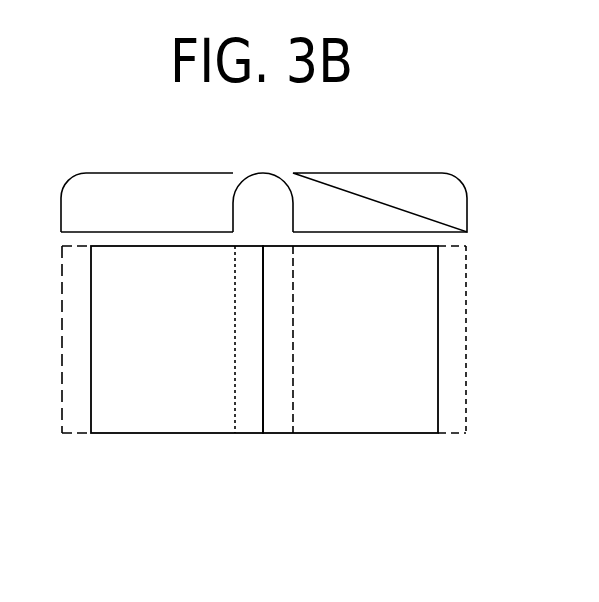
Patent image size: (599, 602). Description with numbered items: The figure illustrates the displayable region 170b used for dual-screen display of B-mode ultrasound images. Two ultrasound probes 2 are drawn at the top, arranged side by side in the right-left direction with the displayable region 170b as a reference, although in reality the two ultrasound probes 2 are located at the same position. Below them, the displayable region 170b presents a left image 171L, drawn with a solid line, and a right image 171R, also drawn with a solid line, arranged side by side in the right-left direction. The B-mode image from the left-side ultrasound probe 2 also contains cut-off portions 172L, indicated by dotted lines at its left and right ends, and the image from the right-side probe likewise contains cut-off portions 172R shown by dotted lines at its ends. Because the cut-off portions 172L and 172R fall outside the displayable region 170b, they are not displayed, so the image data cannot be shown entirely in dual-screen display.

The ultrasound probe 2 is at (123, 172).
The displayable region 170b is at (263, 404).
The left image 171L is at (158, 435).
The right image 171R is at (357, 435).
The cut-off portions 172L is at (73, 435).
The cut-off portions 172R is at (244, 435).